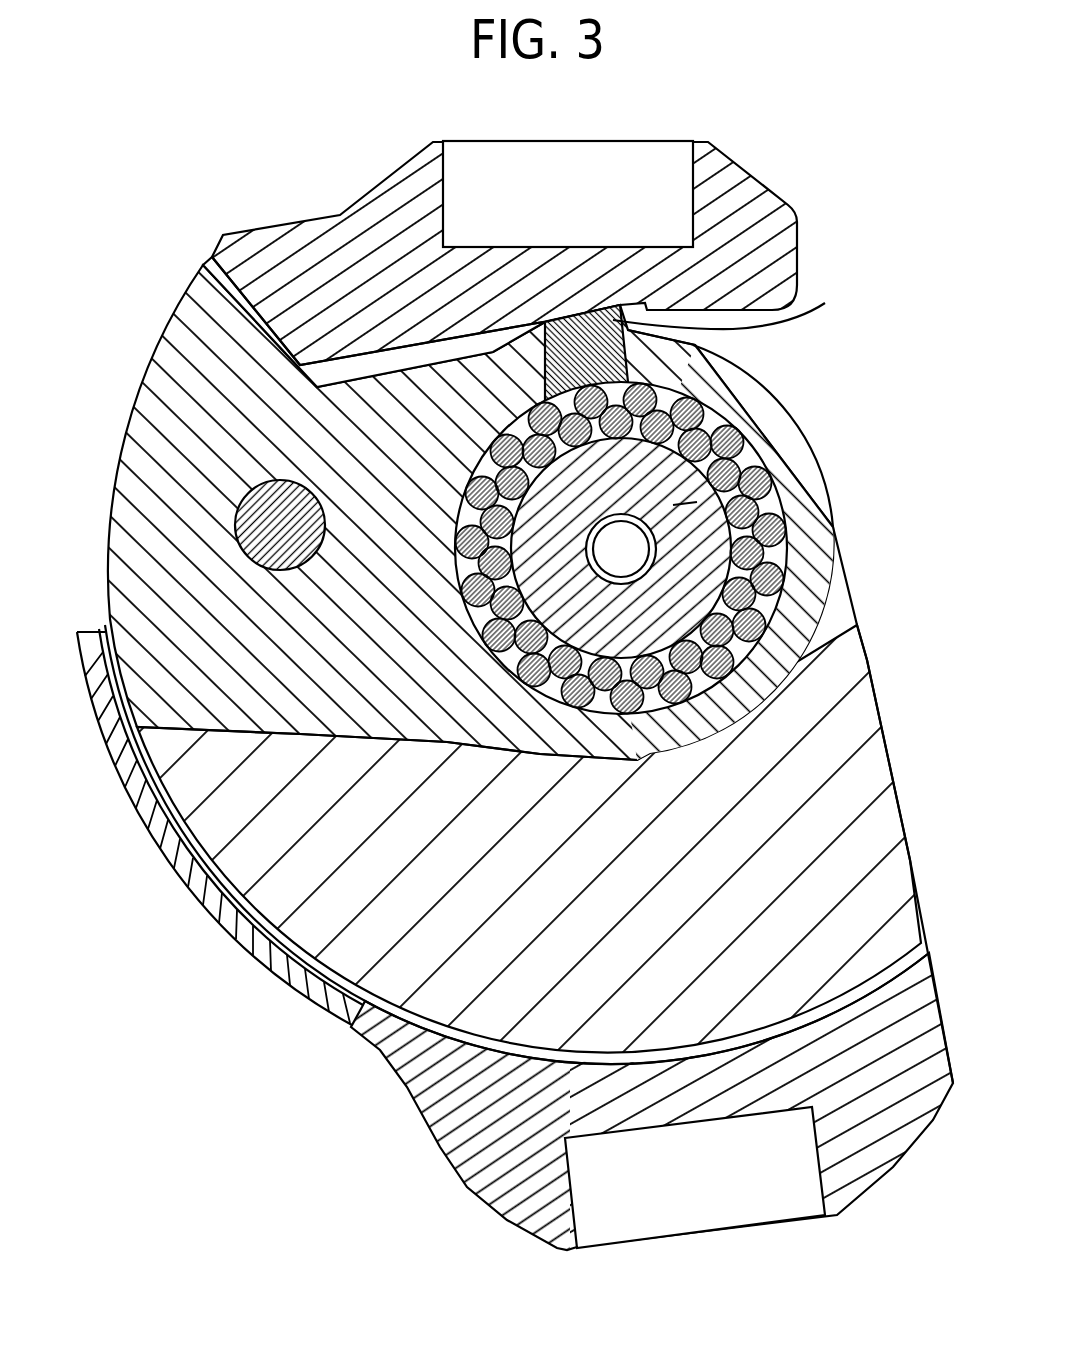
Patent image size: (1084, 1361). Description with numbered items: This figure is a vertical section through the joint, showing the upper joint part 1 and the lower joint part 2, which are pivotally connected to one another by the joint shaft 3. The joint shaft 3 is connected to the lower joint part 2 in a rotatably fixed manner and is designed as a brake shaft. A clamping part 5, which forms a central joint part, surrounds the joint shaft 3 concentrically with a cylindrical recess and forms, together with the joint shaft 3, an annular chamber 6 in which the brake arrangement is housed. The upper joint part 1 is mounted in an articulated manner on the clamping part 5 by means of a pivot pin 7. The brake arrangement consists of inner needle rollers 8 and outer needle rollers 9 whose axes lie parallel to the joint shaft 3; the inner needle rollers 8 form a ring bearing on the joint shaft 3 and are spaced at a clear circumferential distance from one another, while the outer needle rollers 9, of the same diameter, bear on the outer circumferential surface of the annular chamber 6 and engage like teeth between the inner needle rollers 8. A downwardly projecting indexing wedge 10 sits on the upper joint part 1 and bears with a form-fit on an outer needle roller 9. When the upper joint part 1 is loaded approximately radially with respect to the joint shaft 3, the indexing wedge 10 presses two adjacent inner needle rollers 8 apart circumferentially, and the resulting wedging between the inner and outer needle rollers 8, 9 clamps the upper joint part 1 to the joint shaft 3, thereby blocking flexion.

The upper joint part 1 is at (775, 232).
The lower joint part 2 is at (462, 1150).
The joint shaft 3 is at (752, 438).
The clamping part 5 is at (173, 363).
The annular chamber 6 is at (793, 547).
The pivot pin 7 is at (275, 500).
The inner needle rollers 8 is at (763, 587).
The outer needle rollers 9 is at (780, 547).
The indexing wedge 10 is at (740, 306).